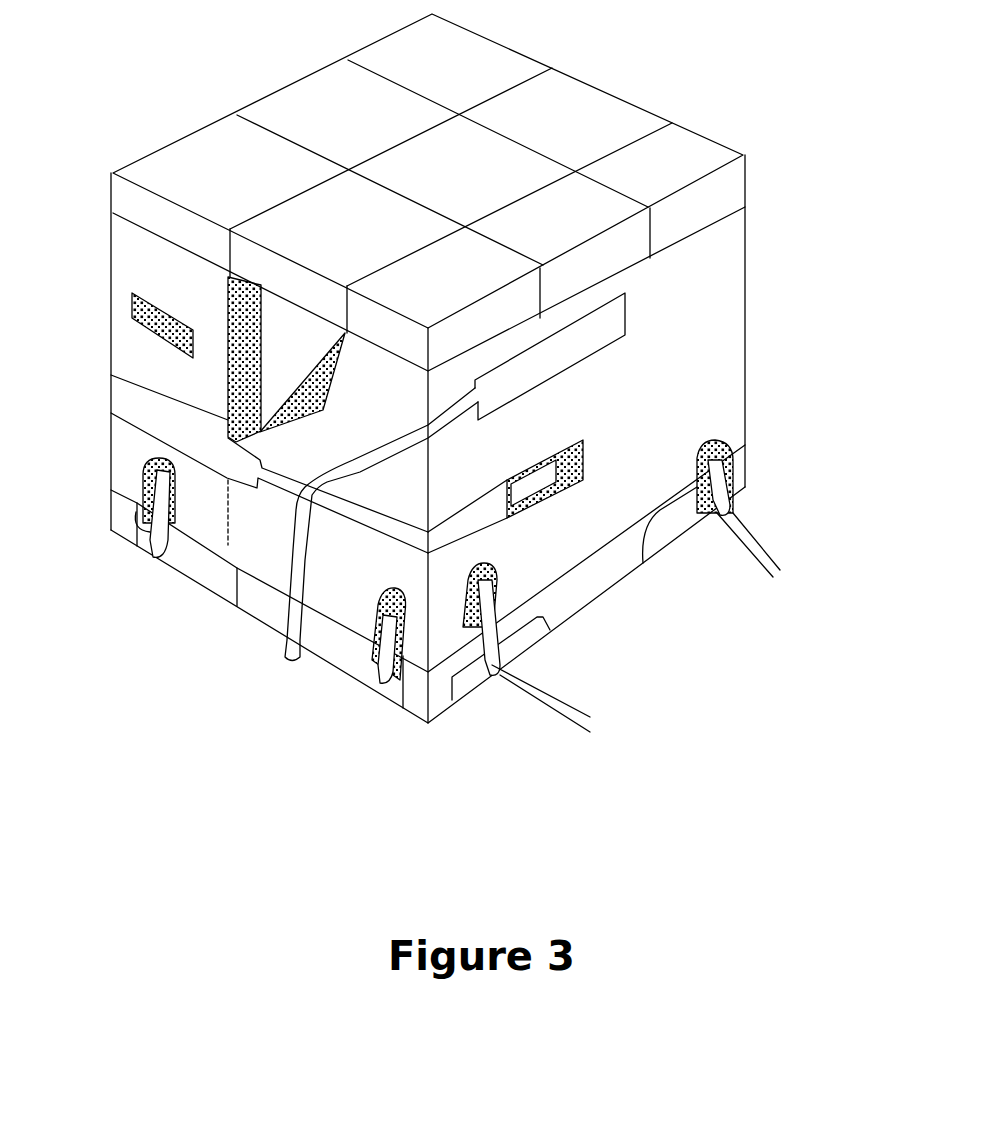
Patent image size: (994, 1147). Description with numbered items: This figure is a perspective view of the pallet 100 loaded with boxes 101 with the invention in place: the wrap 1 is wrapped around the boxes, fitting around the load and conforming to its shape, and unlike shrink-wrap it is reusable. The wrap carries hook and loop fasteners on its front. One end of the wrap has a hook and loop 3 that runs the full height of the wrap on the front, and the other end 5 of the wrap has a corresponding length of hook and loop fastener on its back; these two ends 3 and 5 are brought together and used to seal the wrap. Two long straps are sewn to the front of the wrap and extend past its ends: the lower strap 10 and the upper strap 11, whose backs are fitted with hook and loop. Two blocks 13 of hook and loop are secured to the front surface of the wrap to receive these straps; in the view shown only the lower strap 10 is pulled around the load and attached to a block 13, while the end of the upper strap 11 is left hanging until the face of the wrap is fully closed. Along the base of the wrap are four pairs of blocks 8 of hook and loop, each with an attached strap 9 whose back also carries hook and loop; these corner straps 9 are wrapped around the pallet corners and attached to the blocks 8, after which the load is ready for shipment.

The wrap 1 is at (735, 283).
The hook and loop 3 is at (260, 318).
The other end of the wrap 5 is at (300, 417).
The blocks of hook and loop 8 is at (145, 464).
The strap 9 is at (155, 558).
The lower strap 10 is at (345, 513).
The upper strap 11 is at (543, 377).
The blocks of hook and loop 13 is at (132, 318).
The pallet 100 is at (590, 592).
The boxes 101 is at (553, 120).